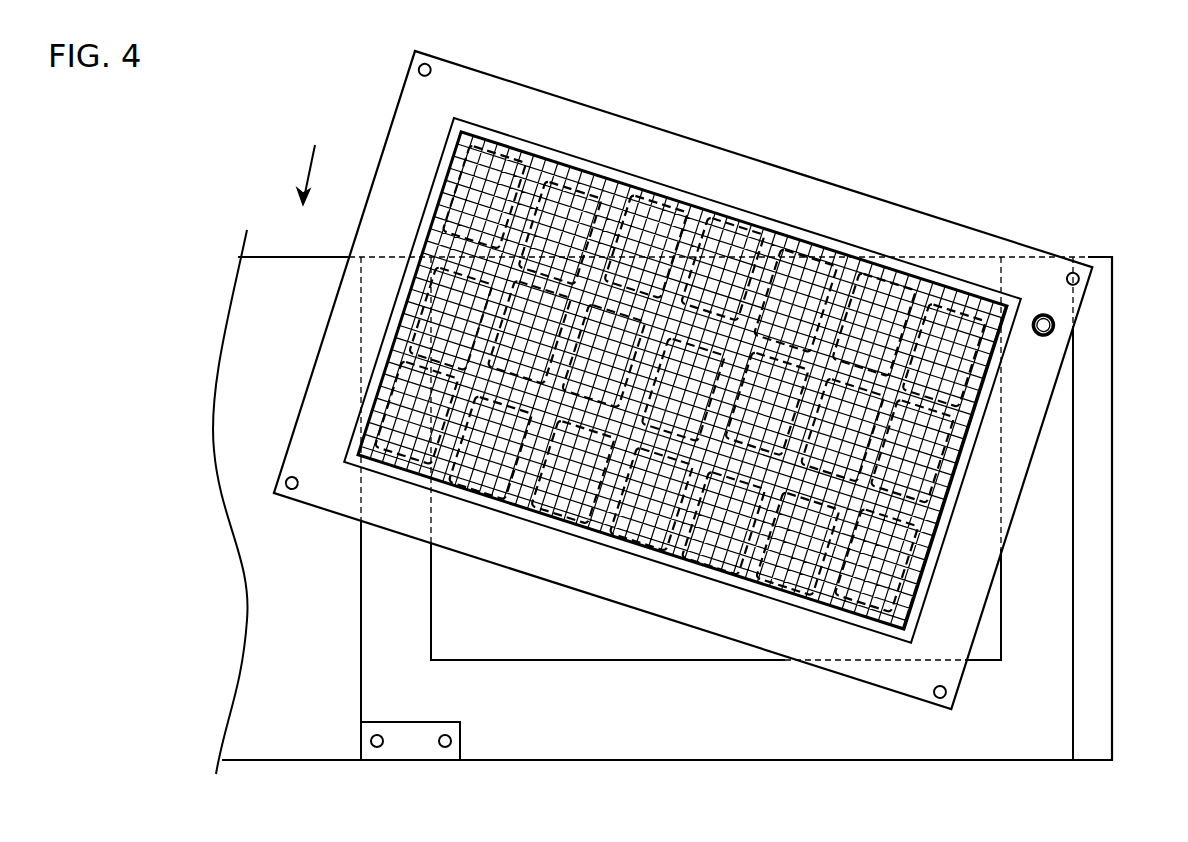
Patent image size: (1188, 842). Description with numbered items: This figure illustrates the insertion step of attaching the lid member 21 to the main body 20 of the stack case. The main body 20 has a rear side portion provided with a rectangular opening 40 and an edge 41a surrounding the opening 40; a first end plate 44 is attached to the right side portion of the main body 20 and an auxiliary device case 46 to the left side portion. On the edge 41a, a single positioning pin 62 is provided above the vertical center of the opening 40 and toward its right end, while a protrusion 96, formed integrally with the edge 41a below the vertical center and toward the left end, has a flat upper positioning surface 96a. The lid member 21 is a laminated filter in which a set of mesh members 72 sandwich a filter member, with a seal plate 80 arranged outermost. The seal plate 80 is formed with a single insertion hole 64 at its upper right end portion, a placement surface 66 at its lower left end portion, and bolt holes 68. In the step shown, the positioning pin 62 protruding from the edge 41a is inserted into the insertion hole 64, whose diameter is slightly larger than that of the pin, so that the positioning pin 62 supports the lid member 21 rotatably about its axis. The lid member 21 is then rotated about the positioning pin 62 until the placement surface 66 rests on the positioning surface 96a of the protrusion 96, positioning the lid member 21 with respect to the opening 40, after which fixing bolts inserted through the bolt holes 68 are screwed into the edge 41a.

The main body 20 is at (886, 764).
The lid member 21 is at (683, 380).
The opening 40 is at (663, 662).
The edge 41a is at (795, 740).
The first end plate 44 is at (1095, 411).
The auxiliary device case 46 is at (228, 352).
The positioning pin 62 is at (1043, 324).
The insertion hole 64 is at (1043, 325).
The placement surface 66 is at (683, 380).
The bolt holes 68 is at (682, 381).
The mesh member 72 is at (694, 130).
The seal plate 80 is at (980, 587).
The protrusion 96 is at (407, 752).
The positioning surface 96a is at (430, 722).